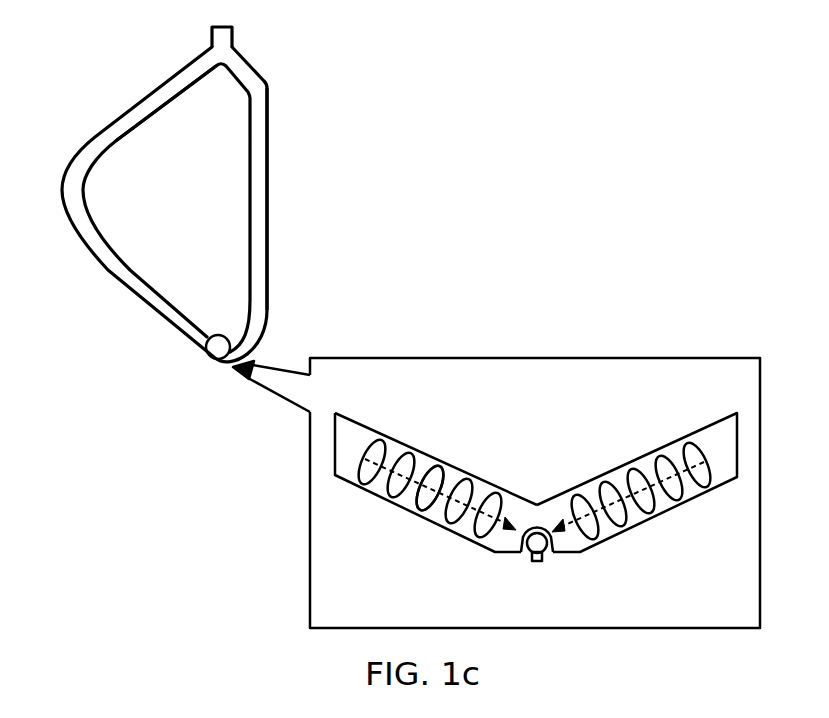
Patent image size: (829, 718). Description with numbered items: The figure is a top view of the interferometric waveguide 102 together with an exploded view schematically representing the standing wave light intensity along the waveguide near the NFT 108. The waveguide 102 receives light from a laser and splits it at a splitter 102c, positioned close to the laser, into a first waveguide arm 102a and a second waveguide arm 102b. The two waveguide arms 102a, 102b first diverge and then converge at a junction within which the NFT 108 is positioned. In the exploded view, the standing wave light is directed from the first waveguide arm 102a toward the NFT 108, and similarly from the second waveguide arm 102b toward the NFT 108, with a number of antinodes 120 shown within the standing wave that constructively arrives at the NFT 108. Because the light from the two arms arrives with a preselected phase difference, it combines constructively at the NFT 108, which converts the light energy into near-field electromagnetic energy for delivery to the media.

The interferometric waveguide 102 is at (277, 163).
The first waveguide arm 102a is at (268, 258).
The second waveguide arm 102b is at (143, 121).
The splitter 102c is at (211, 37).
The NFT 108 is at (215, 335).
The antinodes 120 is at (465, 468).